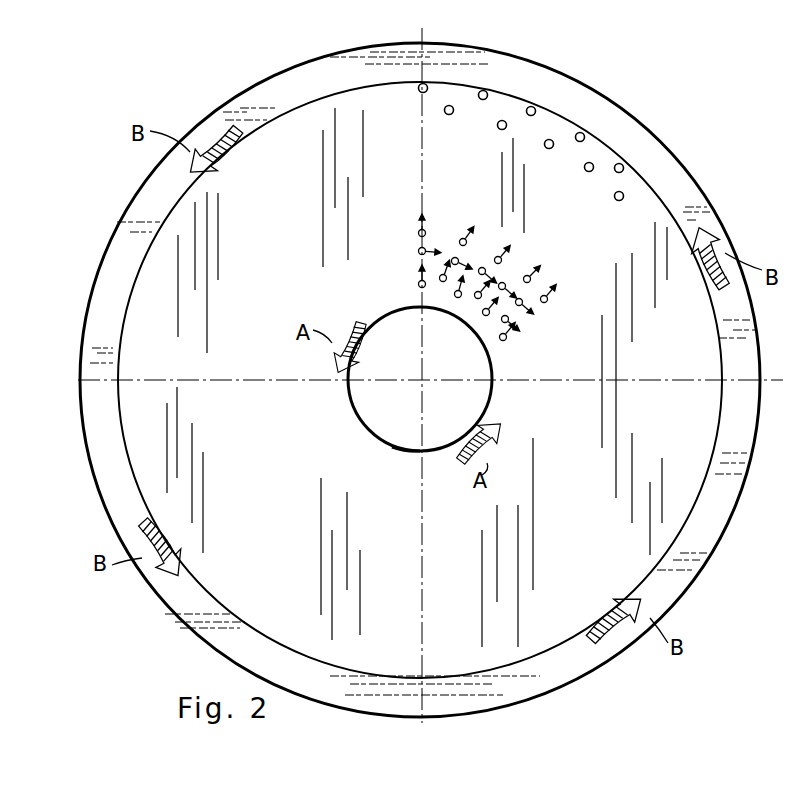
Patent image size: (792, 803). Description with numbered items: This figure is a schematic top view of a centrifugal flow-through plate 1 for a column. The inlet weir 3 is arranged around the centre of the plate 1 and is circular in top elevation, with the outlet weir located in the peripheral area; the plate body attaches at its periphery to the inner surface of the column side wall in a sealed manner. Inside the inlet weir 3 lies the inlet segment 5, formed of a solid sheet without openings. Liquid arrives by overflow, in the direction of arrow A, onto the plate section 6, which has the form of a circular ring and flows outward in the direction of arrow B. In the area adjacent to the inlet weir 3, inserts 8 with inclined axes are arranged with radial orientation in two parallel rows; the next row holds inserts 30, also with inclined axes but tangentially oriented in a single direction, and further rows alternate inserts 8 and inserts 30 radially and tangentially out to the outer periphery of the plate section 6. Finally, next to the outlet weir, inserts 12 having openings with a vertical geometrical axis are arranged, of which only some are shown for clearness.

The plate 1 is at (719, 210).
The inlet weir 3 is at (392, 447).
The inlet segment 5 is at (390, 413).
The plate section 6 is at (172, 374).
The inserts with inclined axis and radial orientation 8 is at (502, 260).
The inserts with vertical axis openings 12 is at (592, 165).
The inserts with tangential orientation 30 is at (454, 257).